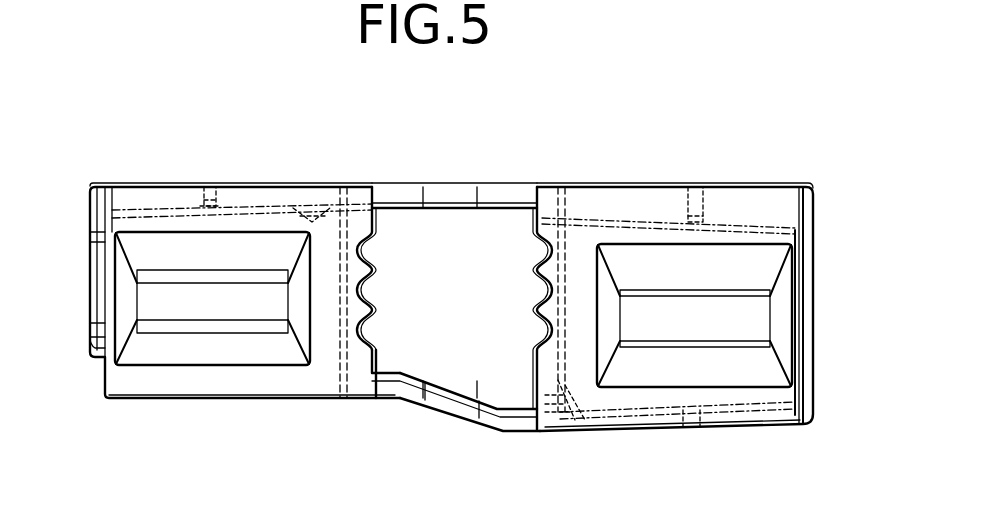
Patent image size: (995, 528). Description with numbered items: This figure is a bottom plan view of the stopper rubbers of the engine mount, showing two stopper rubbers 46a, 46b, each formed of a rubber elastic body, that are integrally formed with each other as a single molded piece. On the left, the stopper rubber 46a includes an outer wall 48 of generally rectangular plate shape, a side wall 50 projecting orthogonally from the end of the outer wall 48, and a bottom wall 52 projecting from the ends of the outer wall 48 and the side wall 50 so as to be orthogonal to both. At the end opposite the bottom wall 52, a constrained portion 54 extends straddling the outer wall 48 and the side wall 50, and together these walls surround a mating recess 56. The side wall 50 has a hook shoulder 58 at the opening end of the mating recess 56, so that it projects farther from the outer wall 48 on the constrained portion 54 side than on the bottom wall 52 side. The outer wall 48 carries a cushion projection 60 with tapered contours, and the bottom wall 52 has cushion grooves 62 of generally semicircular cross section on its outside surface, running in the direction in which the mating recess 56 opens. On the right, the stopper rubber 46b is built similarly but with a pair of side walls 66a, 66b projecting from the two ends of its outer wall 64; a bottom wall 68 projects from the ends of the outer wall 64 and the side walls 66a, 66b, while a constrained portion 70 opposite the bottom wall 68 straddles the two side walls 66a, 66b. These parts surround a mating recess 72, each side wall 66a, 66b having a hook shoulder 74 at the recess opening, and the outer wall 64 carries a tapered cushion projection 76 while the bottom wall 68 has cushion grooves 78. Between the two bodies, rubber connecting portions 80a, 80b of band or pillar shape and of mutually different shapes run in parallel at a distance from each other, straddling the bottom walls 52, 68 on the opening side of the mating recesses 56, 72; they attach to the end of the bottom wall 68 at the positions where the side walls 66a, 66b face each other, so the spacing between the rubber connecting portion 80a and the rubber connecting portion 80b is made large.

The stopper rubber 46a is at (160, 407).
The stopper rubber 46b is at (747, 173).
The outer wall 48 is at (220, 380).
The side wall 50 is at (153, 198).
The bottom wall 52 is at (357, 357).
The constrained portion 54 is at (102, 268).
The mating recess 56 is at (316, 198).
The hook shoulder 58 is at (217, 183).
The cushion projection 60 is at (235, 302).
The cushion grooves 62 is at (372, 240).
The outer wall 64 is at (632, 398).
The side wall 66a is at (753, 423).
The side wall 66b is at (643, 203).
The bottom wall 68 is at (582, 428).
The constrained portion 70 is at (805, 260).
The mating recess 72 is at (583, 230).
The hook shoulder 74 is at (685, 200).
The cushion projection 76 is at (743, 322).
The cushion grooves 78 is at (540, 254).
The rubber connecting portion 80a is at (452, 403).
The rubber connecting portion 80b is at (452, 192).